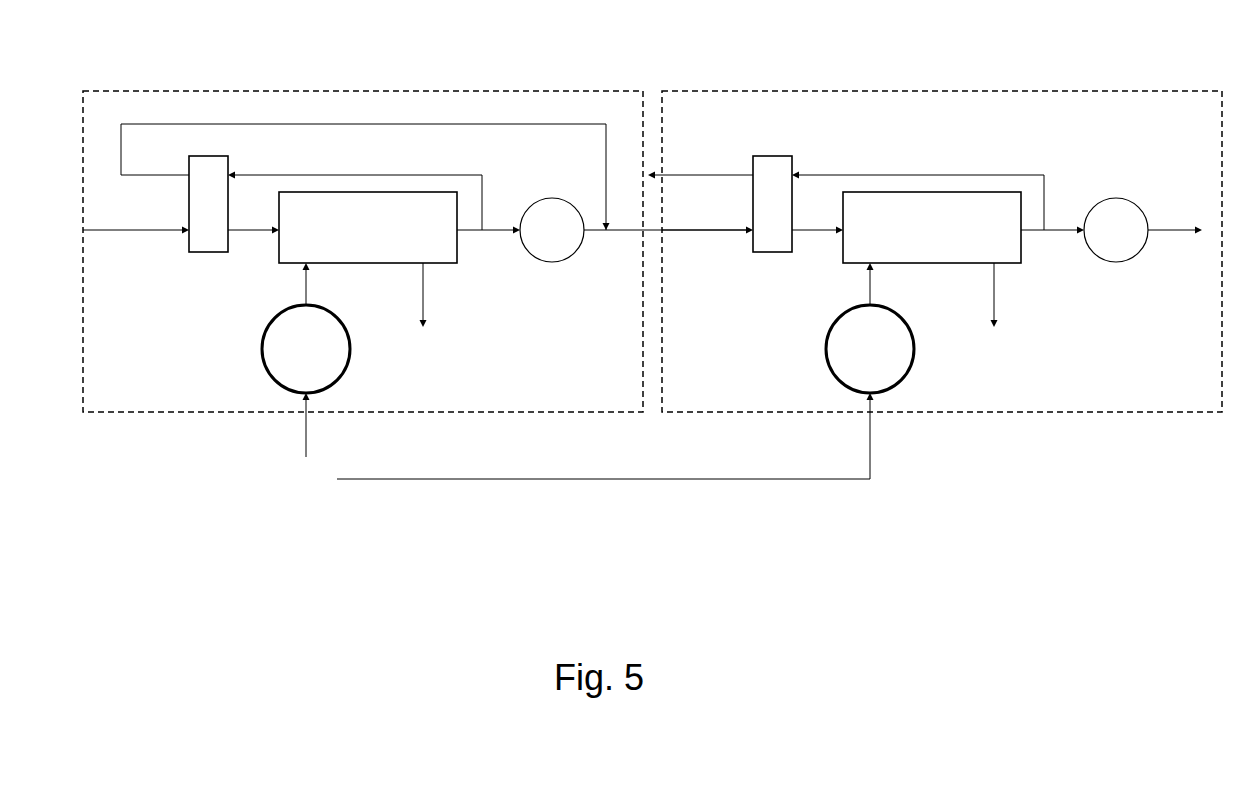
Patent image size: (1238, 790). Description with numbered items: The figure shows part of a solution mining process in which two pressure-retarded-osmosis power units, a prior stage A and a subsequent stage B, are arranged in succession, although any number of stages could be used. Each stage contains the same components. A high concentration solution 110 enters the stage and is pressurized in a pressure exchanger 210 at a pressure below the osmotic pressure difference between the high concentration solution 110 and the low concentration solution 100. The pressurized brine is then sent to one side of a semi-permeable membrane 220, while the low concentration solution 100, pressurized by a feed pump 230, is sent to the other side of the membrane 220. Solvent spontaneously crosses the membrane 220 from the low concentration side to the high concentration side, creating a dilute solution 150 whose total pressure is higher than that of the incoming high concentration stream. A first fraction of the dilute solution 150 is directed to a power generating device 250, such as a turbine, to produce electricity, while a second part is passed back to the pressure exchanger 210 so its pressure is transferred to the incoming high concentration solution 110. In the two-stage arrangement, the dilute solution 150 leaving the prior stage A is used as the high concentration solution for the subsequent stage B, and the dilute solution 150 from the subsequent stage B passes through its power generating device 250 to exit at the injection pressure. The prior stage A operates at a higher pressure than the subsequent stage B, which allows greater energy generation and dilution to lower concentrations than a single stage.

The prior stage osmotic power unit A is at (298, 84).
The subsequent stage osmotic power unit B is at (795, 87).
The low concentration solution 100 is at (586, 441).
The high concentration solution 110 is at (136, 245).
The dilute solution 150 is at (668, 243).
The pressure exchanger 210 is at (490, 204).
The semi-permeable membrane 220 is at (650, 227).
The feed pump 230 is at (588, 349).
The power generating device 250 is at (834, 230).